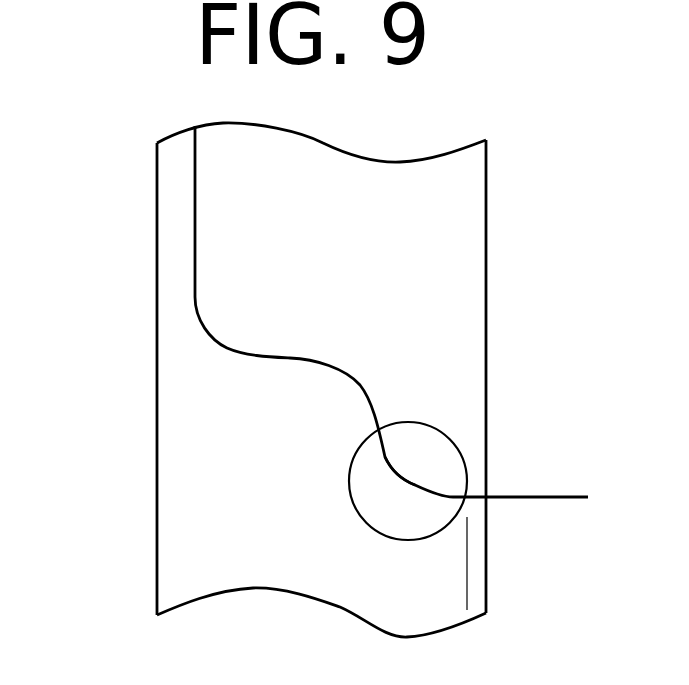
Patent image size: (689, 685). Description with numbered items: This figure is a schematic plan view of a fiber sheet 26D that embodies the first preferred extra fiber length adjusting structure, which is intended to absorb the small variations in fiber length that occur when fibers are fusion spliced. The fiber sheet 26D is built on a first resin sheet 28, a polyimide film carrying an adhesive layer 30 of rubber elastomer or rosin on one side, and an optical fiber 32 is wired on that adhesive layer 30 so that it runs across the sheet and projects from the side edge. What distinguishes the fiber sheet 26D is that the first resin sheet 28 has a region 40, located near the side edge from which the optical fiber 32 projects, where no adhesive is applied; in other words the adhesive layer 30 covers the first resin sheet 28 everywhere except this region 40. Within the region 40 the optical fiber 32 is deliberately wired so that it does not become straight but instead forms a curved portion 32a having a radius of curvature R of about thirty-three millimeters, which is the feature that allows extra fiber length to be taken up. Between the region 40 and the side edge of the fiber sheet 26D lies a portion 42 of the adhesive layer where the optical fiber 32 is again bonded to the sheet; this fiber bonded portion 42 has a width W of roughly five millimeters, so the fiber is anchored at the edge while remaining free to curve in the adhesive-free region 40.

The fiber sheet 26D is at (146, 308).
The first resin sheet 28 is at (486, 225).
The adhesive layer 30 is at (430, 319).
The optical fiber 32 is at (263, 360).
The curved portion 32a is at (403, 478).
The region 40 is at (462, 450).
The fiber bonded portion 42 is at (478, 548).
The radius of curvature R is at (409, 474).
The width W is at (405, 587).